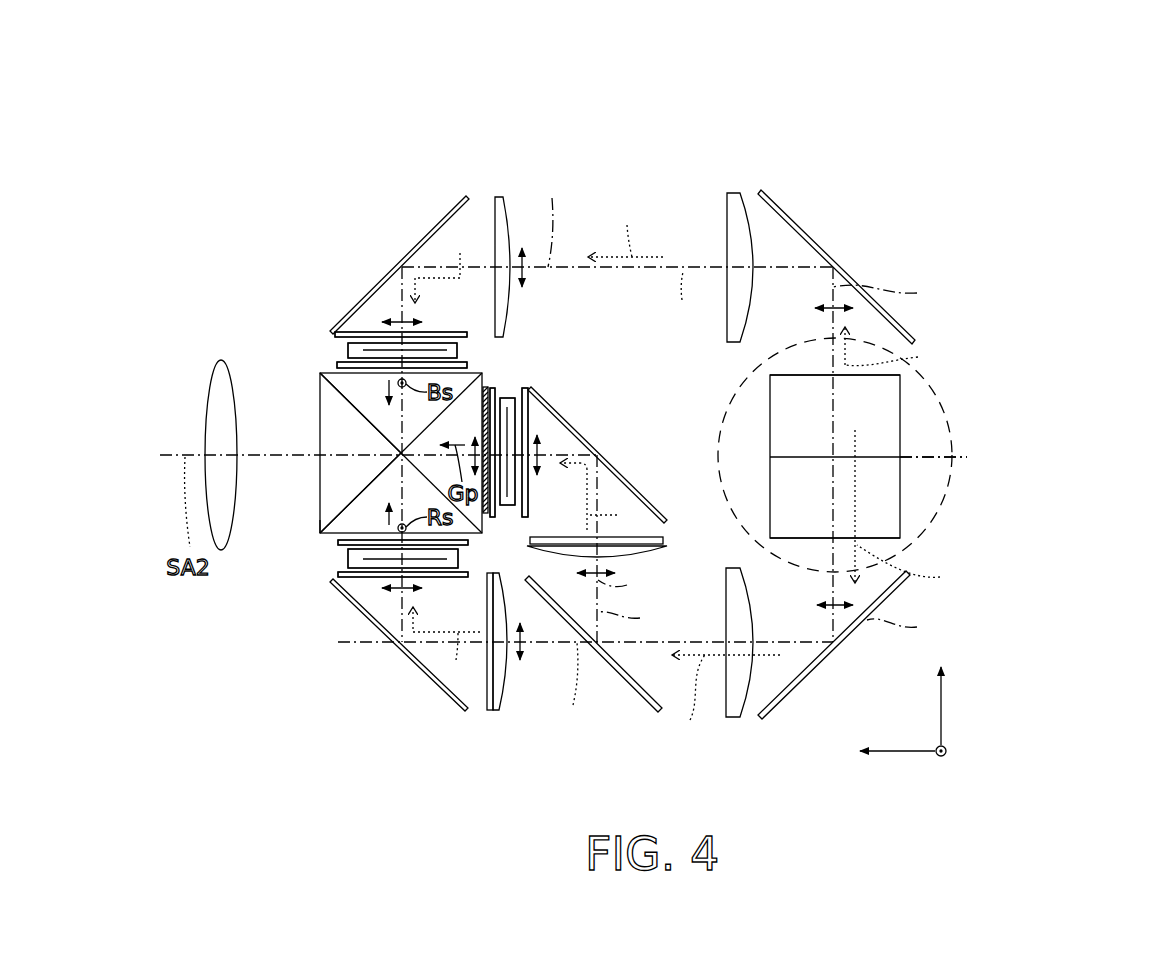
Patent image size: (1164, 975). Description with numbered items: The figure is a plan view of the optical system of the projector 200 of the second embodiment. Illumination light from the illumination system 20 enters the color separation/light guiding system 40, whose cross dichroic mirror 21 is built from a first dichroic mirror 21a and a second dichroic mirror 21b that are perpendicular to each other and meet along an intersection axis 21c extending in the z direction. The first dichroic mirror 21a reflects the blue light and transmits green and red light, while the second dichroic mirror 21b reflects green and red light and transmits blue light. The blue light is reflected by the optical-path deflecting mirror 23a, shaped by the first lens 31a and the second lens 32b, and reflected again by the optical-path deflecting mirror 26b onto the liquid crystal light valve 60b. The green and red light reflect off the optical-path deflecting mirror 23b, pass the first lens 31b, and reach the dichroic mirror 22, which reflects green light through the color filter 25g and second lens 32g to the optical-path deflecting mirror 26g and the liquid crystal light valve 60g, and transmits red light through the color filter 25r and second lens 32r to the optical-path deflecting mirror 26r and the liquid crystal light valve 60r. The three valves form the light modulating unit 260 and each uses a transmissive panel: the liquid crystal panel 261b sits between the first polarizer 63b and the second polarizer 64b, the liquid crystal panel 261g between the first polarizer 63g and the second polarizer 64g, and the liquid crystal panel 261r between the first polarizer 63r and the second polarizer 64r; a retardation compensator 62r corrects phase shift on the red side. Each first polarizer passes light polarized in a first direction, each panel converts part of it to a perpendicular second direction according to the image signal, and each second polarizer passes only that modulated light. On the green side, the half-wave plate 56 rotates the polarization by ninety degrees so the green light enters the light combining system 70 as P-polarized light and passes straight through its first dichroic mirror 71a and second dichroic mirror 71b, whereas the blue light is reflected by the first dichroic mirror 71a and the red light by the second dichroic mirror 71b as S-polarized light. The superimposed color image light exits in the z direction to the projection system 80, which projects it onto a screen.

The projector 200 is at (965, 79).
The light modulating unit 260 is at (310, 255).
The optical-path deflecting mirror 26b is at (423, 240).
The second lens 32b is at (502, 197).
The first lens 31a is at (735, 192).
The optical-path deflecting mirror 23a is at (823, 248).
The color separation/light guiding system 40 is at (923, 233).
The liquid crystal light valve for blue light 60b is at (370, 318).
The first polarizer 63b is at (347, 338).
The projection system 80 is at (222, 360).
The liquid crystal panel 261b is at (347, 350).
The second polarizer 64b is at (337, 367).
The second dichroic mirror 71b is at (350, 410).
The light combining system 70 is at (310, 442).
The first dichroic mirror 71a is at (363, 488).
The retardation compensator 62r is at (297, 523).
The second polarizer 64r is at (340, 541).
The liquid crystal panel 261r is at (350, 558).
The first polarizer 63r is at (352, 583).
The liquid crystal light valve for red light 60r is at (373, 592).
The optical-path deflecting mirror 26r is at (425, 673).
The color filter 25r is at (487, 712).
The second lens 32r is at (500, 713).
The half-wave plate 56 is at (485, 517).
The second polarizer 64g is at (492, 388).
The liquid crystal panel 261g is at (505, 398).
The first polarizer 63g is at (523, 415).
The liquid crystal light valve for green light 60g is at (548, 432).
The optical-path deflecting mirror 26g is at (622, 473).
The color filter 25g is at (667, 540).
The second lens 32g is at (667, 550).
The dichroic mirror 22 is at (637, 692).
The first lens 31b is at (735, 720).
The optical-path deflecting mirror 23b is at (802, 678).
The illumination system 20 is at (973, 467).
The cross dichroic mirror 21 is at (937, 443).
The first dichroic mirror 21a is at (887, 500).
The second dichroic mirror 21b is at (887, 423).
The intersection axis 21c is at (927, 458).